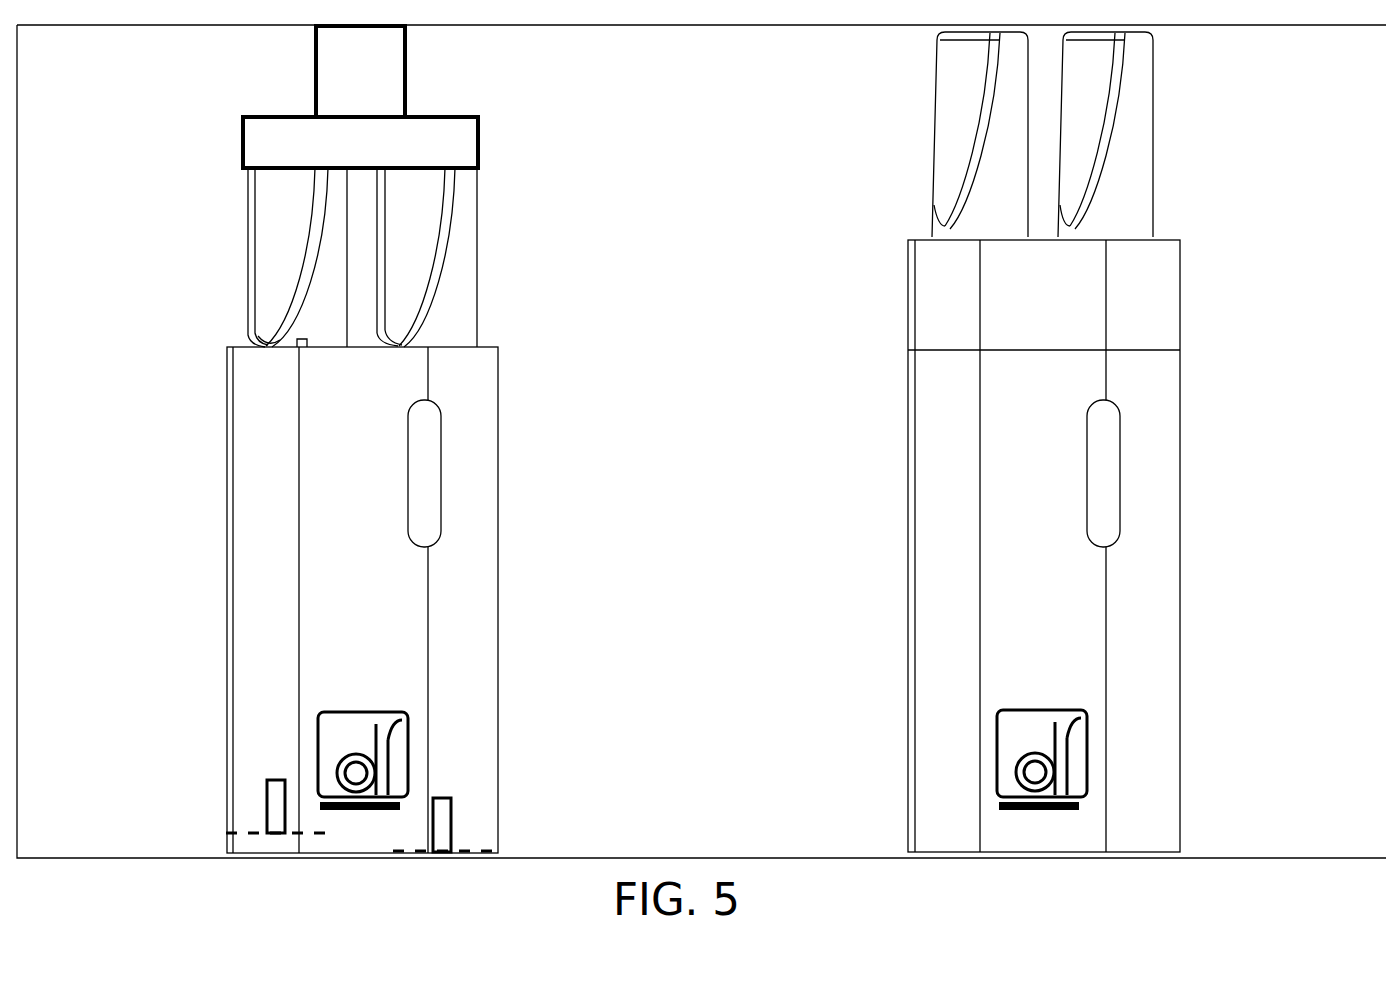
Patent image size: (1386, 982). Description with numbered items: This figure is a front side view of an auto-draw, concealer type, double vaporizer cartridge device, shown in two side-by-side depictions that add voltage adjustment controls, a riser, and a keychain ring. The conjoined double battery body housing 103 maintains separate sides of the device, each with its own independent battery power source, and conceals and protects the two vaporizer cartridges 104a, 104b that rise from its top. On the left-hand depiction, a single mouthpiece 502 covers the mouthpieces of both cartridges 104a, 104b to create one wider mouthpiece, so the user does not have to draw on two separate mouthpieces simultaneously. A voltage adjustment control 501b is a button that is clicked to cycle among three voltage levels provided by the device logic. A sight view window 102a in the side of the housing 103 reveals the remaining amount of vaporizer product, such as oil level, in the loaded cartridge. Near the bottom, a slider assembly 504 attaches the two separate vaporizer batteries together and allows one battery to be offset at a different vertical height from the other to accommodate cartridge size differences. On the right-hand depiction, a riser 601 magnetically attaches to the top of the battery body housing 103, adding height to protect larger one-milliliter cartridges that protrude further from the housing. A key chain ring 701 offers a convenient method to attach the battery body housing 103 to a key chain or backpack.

The single mouthpiece 502 is at (305, 67).
The vaporizer cartridge 104a is at (485, 303).
The vaporizer cartridge 104b is at (238, 205).
The voltage adjustment control 501b is at (280, 328).
The key chain ring 701 is at (216, 382).
The battery body housing 103 is at (360, 673).
The riser 601 is at (1187, 313).
The sight view window 102a is at (452, 463).
The slider assembly 504 is at (255, 812).